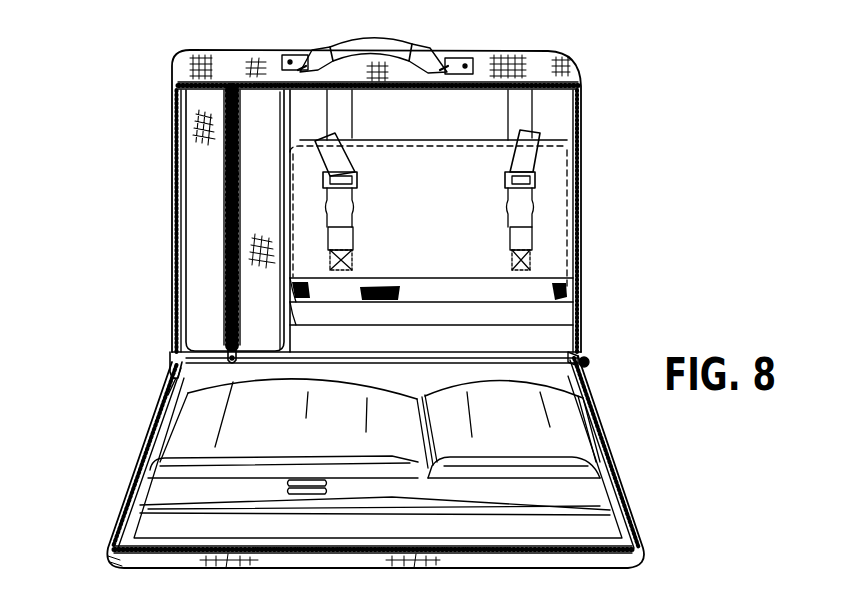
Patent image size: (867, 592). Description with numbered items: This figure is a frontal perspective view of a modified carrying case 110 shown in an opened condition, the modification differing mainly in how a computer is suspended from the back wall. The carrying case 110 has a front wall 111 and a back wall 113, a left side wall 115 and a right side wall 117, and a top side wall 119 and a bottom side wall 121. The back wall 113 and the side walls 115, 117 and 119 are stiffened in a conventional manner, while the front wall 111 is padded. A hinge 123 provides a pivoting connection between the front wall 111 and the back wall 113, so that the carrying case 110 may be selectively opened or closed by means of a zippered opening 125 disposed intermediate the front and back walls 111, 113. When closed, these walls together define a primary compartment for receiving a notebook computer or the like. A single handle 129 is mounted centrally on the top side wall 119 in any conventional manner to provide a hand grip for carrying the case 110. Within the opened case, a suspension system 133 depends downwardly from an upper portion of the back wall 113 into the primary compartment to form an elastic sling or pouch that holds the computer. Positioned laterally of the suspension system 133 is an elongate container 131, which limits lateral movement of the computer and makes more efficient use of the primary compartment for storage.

The carrying case 110 is at (651, 450).
The front wall 111 is at (603, 538).
The back wall 113 is at (552, 313).
The left side wall 115 is at (175, 203).
The right side wall 117 is at (583, 201).
The top side wall 119 is at (533, 57).
The bottom side wall 121 is at (560, 343).
The hinge 123 is at (172, 377).
The zippered opening 125 is at (137, 452).
The handle 129 is at (372, 33).
The elongate container 131 is at (173, 122).
The suspension system 133 is at (574, 144).